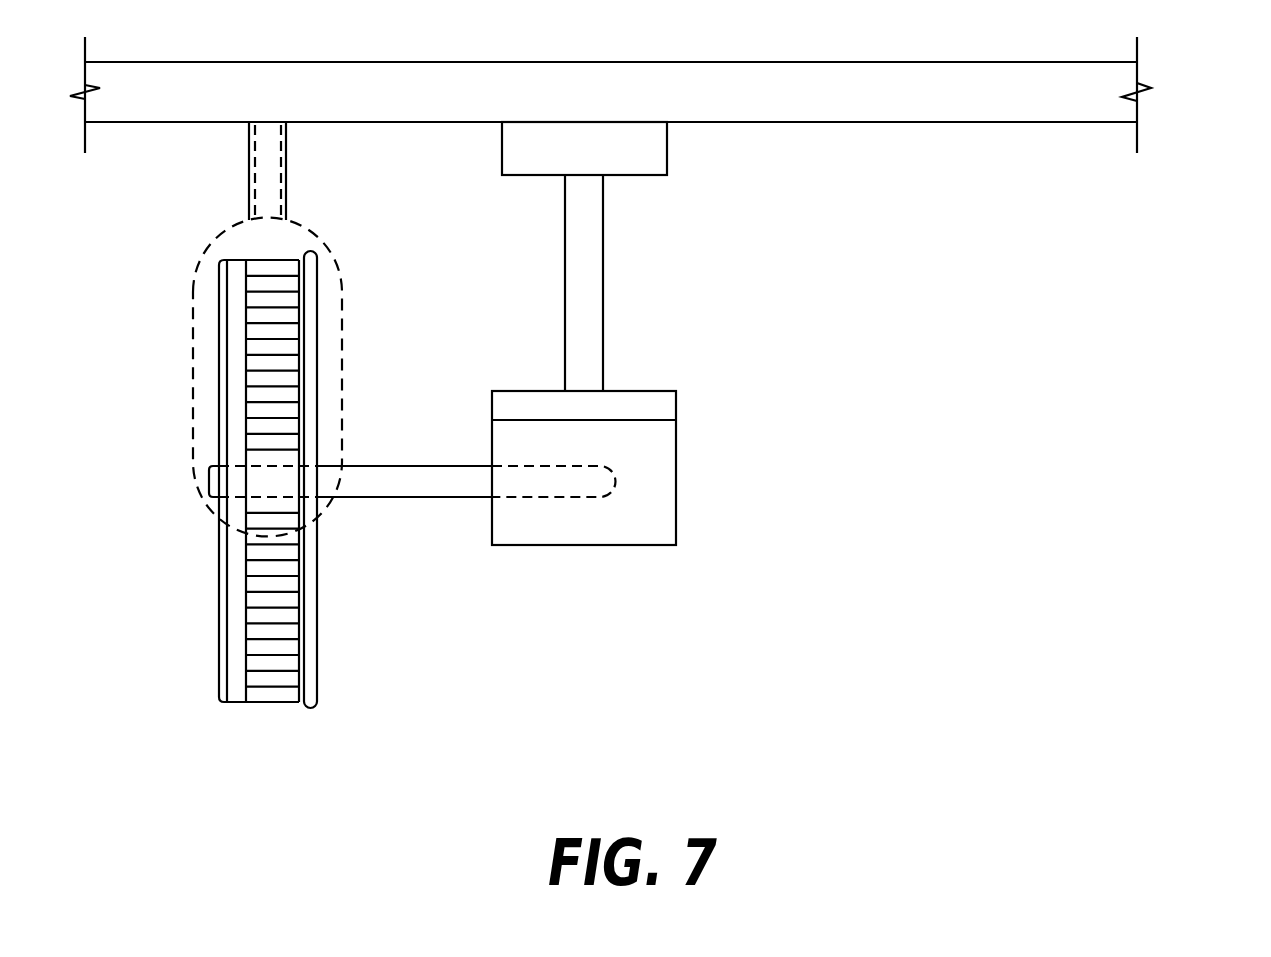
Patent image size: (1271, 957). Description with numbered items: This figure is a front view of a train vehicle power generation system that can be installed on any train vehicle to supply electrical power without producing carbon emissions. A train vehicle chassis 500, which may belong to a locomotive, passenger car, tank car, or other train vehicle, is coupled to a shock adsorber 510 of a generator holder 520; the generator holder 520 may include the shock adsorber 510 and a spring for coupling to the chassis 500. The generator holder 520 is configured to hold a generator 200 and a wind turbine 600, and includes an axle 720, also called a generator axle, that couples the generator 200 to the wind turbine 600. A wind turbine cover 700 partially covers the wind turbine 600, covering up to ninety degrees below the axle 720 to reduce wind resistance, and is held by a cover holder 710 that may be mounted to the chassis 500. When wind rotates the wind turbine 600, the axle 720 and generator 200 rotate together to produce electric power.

The train vehicle chassis 500 is at (1127, 114).
The shock adsorber 510 is at (667, 160).
The generator holder 520 is at (603, 316).
The generator 200 is at (585, 545).
The axle 720 is at (430, 497).
The wind turbine cover 700 is at (330, 372).
The post 710 is at (286, 200).
The wind turbine 600 is at (277, 670).